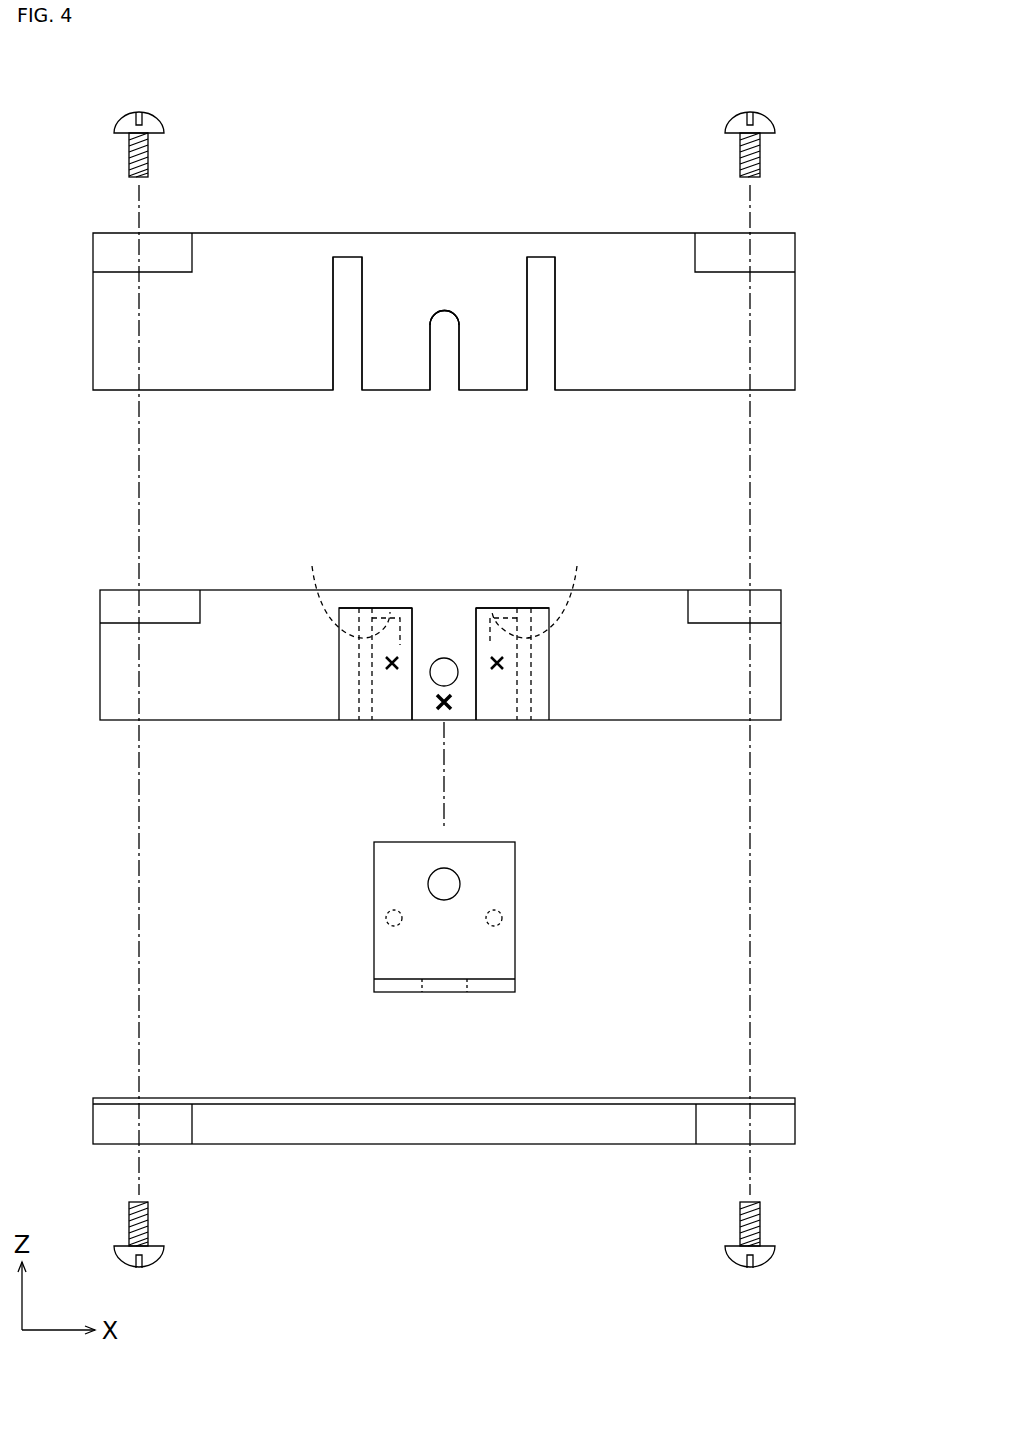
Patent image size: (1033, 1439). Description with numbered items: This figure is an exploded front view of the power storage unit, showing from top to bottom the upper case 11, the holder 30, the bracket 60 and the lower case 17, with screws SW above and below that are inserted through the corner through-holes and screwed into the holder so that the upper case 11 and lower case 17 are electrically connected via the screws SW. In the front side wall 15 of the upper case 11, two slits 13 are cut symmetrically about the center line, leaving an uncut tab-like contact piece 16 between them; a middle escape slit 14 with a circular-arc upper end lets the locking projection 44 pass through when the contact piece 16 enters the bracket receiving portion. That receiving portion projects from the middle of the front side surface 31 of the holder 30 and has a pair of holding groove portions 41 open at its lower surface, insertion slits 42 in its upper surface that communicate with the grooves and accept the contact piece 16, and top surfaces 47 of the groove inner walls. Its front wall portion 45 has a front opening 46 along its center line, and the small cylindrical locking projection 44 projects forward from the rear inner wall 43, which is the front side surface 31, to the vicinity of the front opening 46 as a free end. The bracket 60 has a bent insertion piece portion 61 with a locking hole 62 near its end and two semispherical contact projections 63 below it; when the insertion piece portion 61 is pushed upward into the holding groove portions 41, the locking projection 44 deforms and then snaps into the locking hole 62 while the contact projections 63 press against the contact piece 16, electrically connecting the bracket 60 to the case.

The screw SW is at (765, 113).
The upper case 11 is at (485, 281).
The front side wall 15 is at (236, 300).
The slit 13 is at (362, 309).
The escape slit 14 is at (445, 318).
The contact piece 16 is at (460, 305).
The holder 30 is at (489, 643).
The front side surface 31 is at (230, 635).
The holding groove portion 41 is at (394, 663).
The insertion slit 42 is at (378, 608).
The rear inner wall 43 is at (447, 626).
The locking projection 44 is at (441, 670).
The front wall portion 45 is at (385, 705).
The front opening 46 is at (440, 702).
The top surface 47 is at (443, 587).
The bracket 60 is at (529, 895).
The insertion piece portion 61 is at (495, 878).
The locking hole 62 is at (443, 878).
The contact projection 63 is at (497, 924).
The lower case 17 is at (792, 1070).